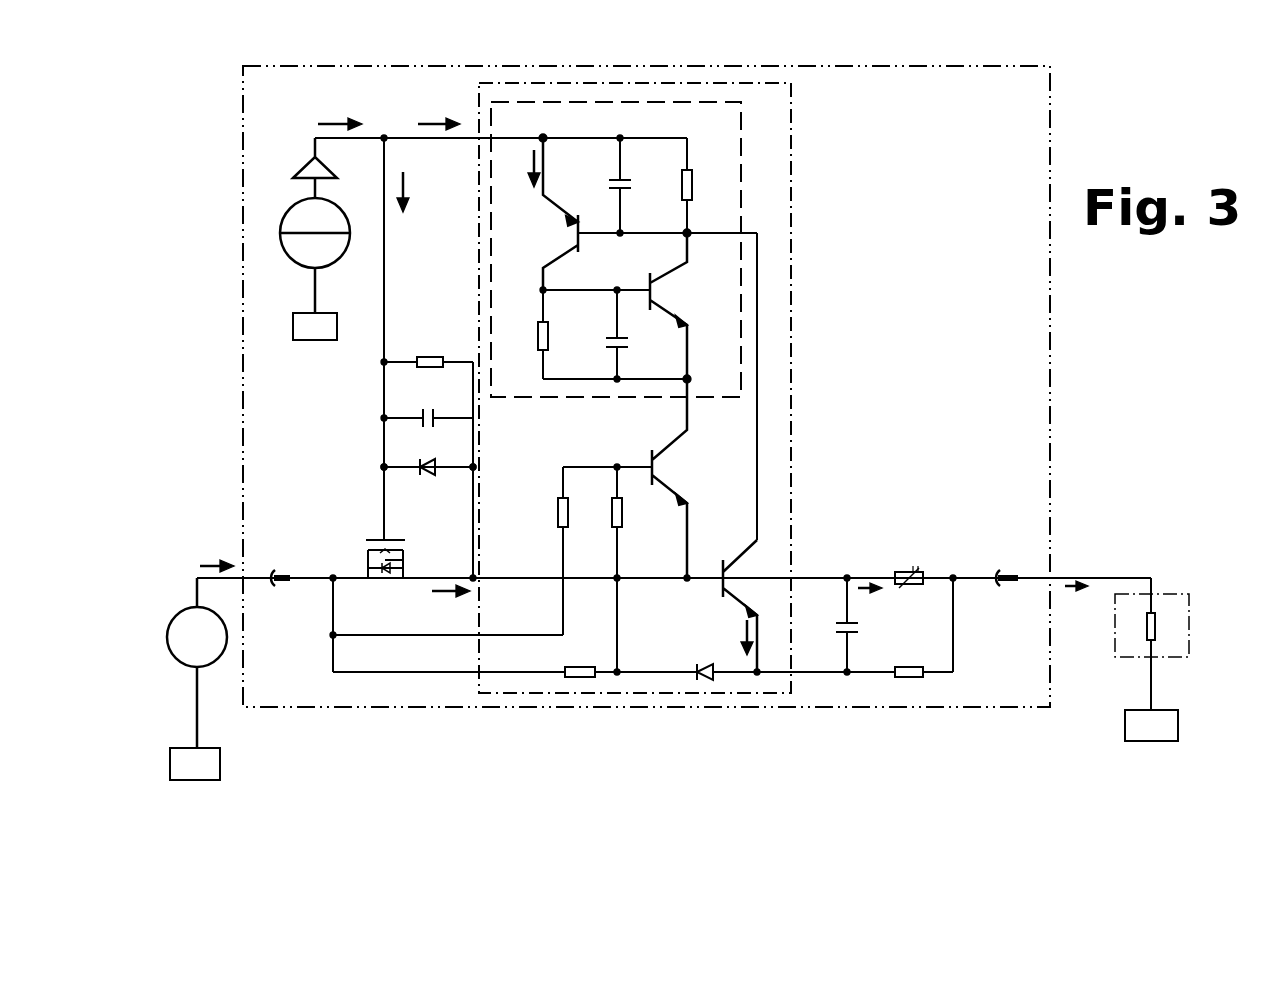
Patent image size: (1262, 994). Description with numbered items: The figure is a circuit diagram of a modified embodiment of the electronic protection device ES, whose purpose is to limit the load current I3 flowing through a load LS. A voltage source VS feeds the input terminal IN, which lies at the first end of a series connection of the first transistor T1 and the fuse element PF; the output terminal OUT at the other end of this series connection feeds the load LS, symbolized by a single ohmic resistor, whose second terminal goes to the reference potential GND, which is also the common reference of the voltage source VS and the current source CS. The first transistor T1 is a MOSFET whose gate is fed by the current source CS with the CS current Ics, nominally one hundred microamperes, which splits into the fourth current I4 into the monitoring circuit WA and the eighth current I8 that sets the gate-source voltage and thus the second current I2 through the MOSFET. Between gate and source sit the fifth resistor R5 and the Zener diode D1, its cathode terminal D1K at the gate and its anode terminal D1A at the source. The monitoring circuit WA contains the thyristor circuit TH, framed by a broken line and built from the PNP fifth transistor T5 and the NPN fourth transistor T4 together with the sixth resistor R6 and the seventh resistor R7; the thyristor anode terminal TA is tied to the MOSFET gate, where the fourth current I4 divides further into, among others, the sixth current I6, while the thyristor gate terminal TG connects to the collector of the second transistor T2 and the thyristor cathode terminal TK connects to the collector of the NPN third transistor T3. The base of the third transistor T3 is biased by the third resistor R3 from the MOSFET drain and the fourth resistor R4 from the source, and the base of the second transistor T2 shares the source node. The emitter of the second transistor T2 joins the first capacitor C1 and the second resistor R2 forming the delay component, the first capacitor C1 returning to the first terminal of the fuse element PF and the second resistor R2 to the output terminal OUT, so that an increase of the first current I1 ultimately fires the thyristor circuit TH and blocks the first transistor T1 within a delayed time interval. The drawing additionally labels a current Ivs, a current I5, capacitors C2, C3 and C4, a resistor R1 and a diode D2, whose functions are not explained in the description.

The electronic protection device ES is at (1049, 256).
The monitoring circuit WA is at (791, 157).
The thyristor circuit TH is at (748, 146).
The current source CS is at (290, 268).
The reference potential GND is at (674, 546).
The CS current Ics is at (340, 106).
The fourth current I4 is at (439, 106).
The eighth current I8 is at (415, 192).
The sixth current I6 is at (525, 166).
The second current I2 is at (451, 599).
The current I5 is at (740, 636).
The first current I1 is at (870, 603).
The load current I3 is at (1077, 601).
The supply current Ivs is at (217, 549).
The fifth resistor R5 is at (428, 374).
The capacitor C3 is at (428, 426).
The Zener diode D1 is at (428, 481).
The cathode terminal of the Zener diode D1K is at (384, 467).
The anode terminal of the Zener diode D1A is at (473, 467).
The first transistor T1 is at (385, 538).
The input terminal IN is at (282, 578).
The output terminal OUT is at (1000, 573).
The voltage source VS is at (190, 612).
The third resistor R3 is at (545, 551).
The fourth resistor R4 is at (631, 569).
The third transistor T3 is at (684, 478).
The thyristor cathode terminal TK is at (687, 379).
The seventh resistor R7 is at (559, 334).
The capacitor C4 is at (628, 334).
The fourth transistor T4 is at (681, 306).
The fifth transistor T5 is at (548, 214).
The thyristor anode terminal TA is at (543, 138).
The capacitor C2 is at (607, 185).
The sixth resistor R6 is at (676, 185).
The thyristor gate terminal TG is at (687, 233).
The second transistor T2 is at (752, 606).
The resistor R1 is at (580, 660).
The diode D2 is at (702, 661).
The first capacitor C1 is at (833, 625).
The fuse element PF is at (912, 569).
The second resistor R2 is at (909, 661).
The load LS is at (1189, 604).